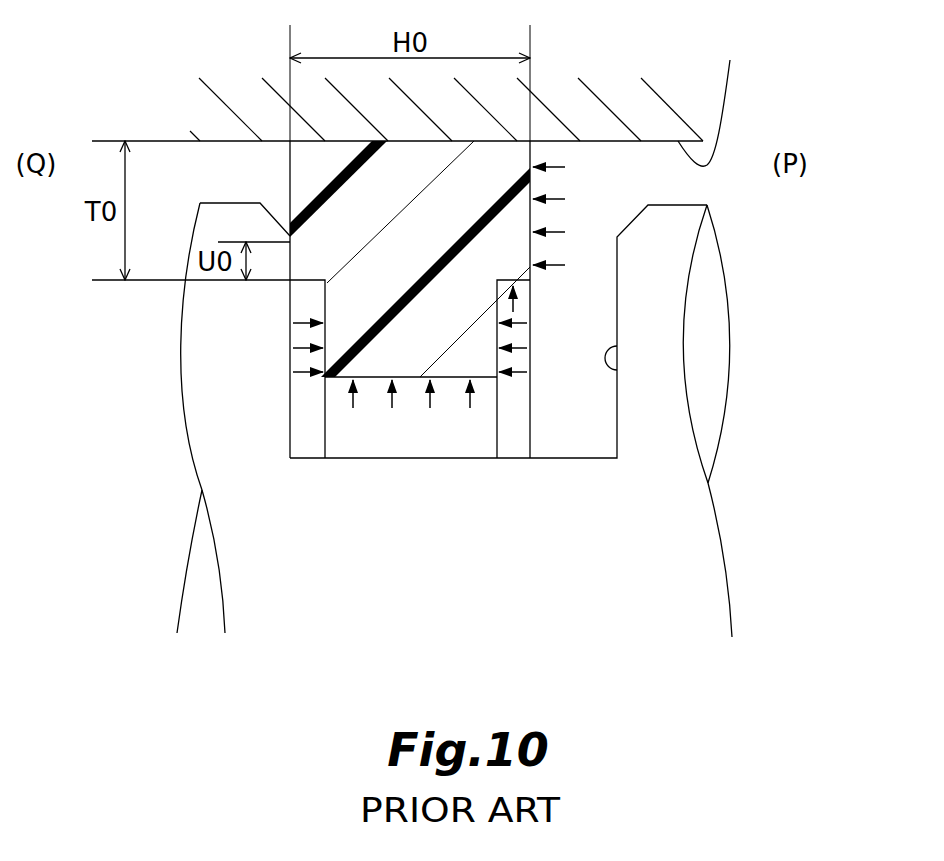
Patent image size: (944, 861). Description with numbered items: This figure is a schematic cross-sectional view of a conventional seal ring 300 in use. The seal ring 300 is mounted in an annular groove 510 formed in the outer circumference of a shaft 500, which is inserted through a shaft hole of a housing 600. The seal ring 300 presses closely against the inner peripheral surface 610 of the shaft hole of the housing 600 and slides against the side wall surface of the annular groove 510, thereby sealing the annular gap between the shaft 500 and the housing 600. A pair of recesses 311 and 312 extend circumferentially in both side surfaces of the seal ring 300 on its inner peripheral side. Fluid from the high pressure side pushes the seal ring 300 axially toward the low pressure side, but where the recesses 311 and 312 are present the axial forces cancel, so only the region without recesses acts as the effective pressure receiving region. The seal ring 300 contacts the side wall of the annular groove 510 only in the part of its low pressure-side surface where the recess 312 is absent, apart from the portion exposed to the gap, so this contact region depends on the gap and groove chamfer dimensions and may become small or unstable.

The seal ring 300 is at (576, 290).
The recess 311 is at (497, 358).
The recess 312 is at (327, 358).
The shaft 500 is at (454, 420).
The annular groove 510 is at (617, 370).
The housing 600 is at (397, 84).
The inner peripheral surface 610 is at (717, 97).